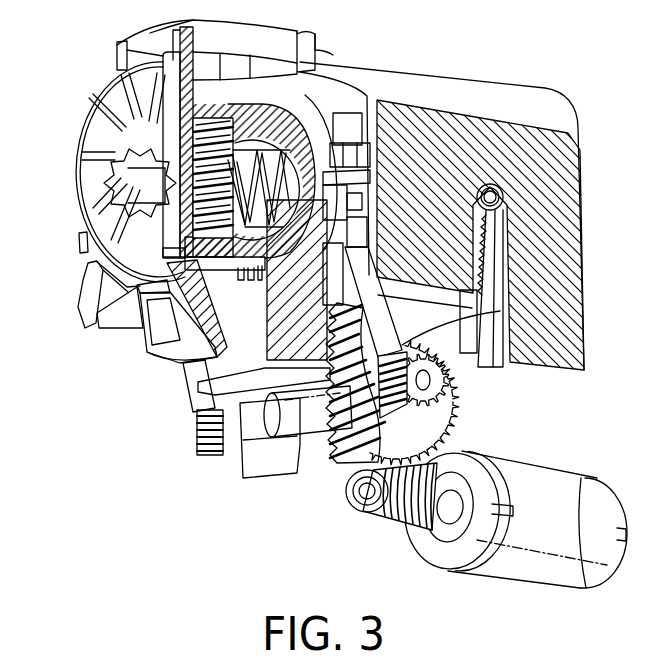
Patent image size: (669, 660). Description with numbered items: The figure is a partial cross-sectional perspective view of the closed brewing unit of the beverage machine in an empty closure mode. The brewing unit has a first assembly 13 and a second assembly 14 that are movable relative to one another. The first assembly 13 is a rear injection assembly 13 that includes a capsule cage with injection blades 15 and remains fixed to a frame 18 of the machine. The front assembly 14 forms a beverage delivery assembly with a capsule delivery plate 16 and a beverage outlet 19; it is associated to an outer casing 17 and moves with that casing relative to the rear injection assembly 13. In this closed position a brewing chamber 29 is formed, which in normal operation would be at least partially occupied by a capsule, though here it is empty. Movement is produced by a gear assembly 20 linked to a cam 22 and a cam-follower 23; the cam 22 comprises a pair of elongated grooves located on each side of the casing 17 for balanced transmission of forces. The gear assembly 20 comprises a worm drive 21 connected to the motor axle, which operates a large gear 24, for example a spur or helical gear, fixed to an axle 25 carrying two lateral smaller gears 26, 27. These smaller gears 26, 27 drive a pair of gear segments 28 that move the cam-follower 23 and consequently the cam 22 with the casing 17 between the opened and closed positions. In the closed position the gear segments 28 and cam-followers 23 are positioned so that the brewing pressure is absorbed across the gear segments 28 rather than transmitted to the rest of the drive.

The first assembly 13 is at (258, 282).
The second assembly 14 is at (76, 90).
The injection blades 15 is at (250, 172).
The capsule delivery plate 16 is at (177, 185).
The outer casing 17 is at (447, 90).
The frame 18 is at (312, 341).
The beverage outlet 19 is at (83, 240).
The gear assembly 20 is at (343, 580).
The worm drive 21 is at (393, 531).
The cam 22 is at (504, 293).
The cam-follower 23 is at (490, 198).
The large gear 24 is at (438, 443).
The axle 25 is at (287, 455).
The smaller gear 26 is at (198, 425).
The smaller gear 27 is at (432, 387).
The gear segments 28 is at (441, 324).
The brewing chamber 29 is at (213, 108).